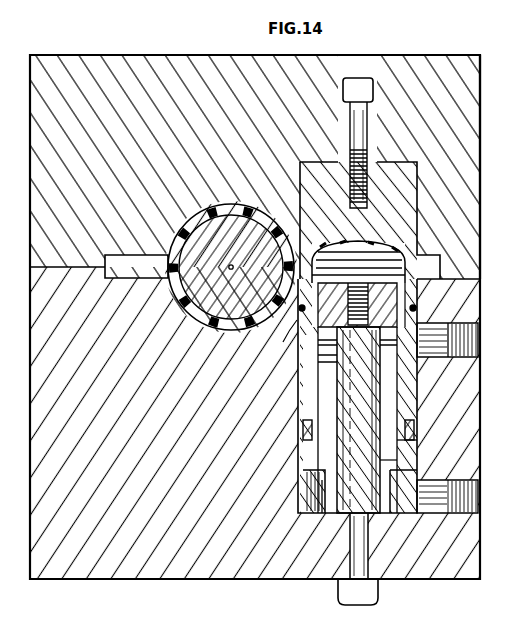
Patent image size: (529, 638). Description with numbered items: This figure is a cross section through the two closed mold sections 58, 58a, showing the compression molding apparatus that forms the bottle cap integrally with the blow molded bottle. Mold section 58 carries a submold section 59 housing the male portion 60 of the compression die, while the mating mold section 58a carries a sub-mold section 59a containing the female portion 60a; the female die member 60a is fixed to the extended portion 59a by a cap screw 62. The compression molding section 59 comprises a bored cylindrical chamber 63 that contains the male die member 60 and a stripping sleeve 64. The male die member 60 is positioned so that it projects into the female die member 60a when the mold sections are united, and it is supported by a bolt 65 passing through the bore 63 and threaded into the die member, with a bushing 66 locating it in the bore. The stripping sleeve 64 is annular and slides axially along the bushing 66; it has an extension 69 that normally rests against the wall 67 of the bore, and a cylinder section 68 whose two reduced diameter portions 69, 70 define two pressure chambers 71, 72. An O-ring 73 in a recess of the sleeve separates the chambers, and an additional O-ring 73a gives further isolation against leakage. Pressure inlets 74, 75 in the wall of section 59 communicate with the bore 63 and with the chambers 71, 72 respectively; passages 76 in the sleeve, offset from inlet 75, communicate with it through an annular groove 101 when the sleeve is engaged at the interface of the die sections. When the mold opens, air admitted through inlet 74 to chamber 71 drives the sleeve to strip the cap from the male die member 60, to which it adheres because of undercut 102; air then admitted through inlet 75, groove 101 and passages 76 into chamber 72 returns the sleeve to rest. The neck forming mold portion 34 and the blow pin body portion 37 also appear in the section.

The region of reduced transverse dimension 34 is at (201, 212).
The body portion 37 is at (183, 313).
The mold section 58 is at (90, 581).
The mating mold section 58a is at (233, 55).
The submold section 59 is at (463, 289).
The sub-mold section 59a is at (464, 121).
The male portion of compression molding die 60 is at (423, 285).
The female portion of compression molding die 60a is at (412, 204).
The cap screw 62 is at (347, 82).
The bored cylindrical chamber 63 is at (420, 410).
The stripping sleeve 64 is at (420, 308).
The bolt 65 is at (358, 558).
The bushing 66 is at (400, 390).
The wall of bore 67 is at (408, 505).
The cylinder section 68 is at (390, 458).
The extension 69 is at (307, 496).
The reduced diameter portion 70 is at (318, 363).
The pressure chamber 71 is at (320, 510).
The pressure chamber 72 is at (303, 425).
The O-ring 73 is at (405, 434).
The additional O-ring 73a is at (450, 331).
The pressure inlet 74 is at (465, 485).
The pressure inlet 75 is at (471, 347).
The passage 76 is at (322, 387).
The annular groove 101 is at (277, 348).
The undercut 102 is at (410, 250).